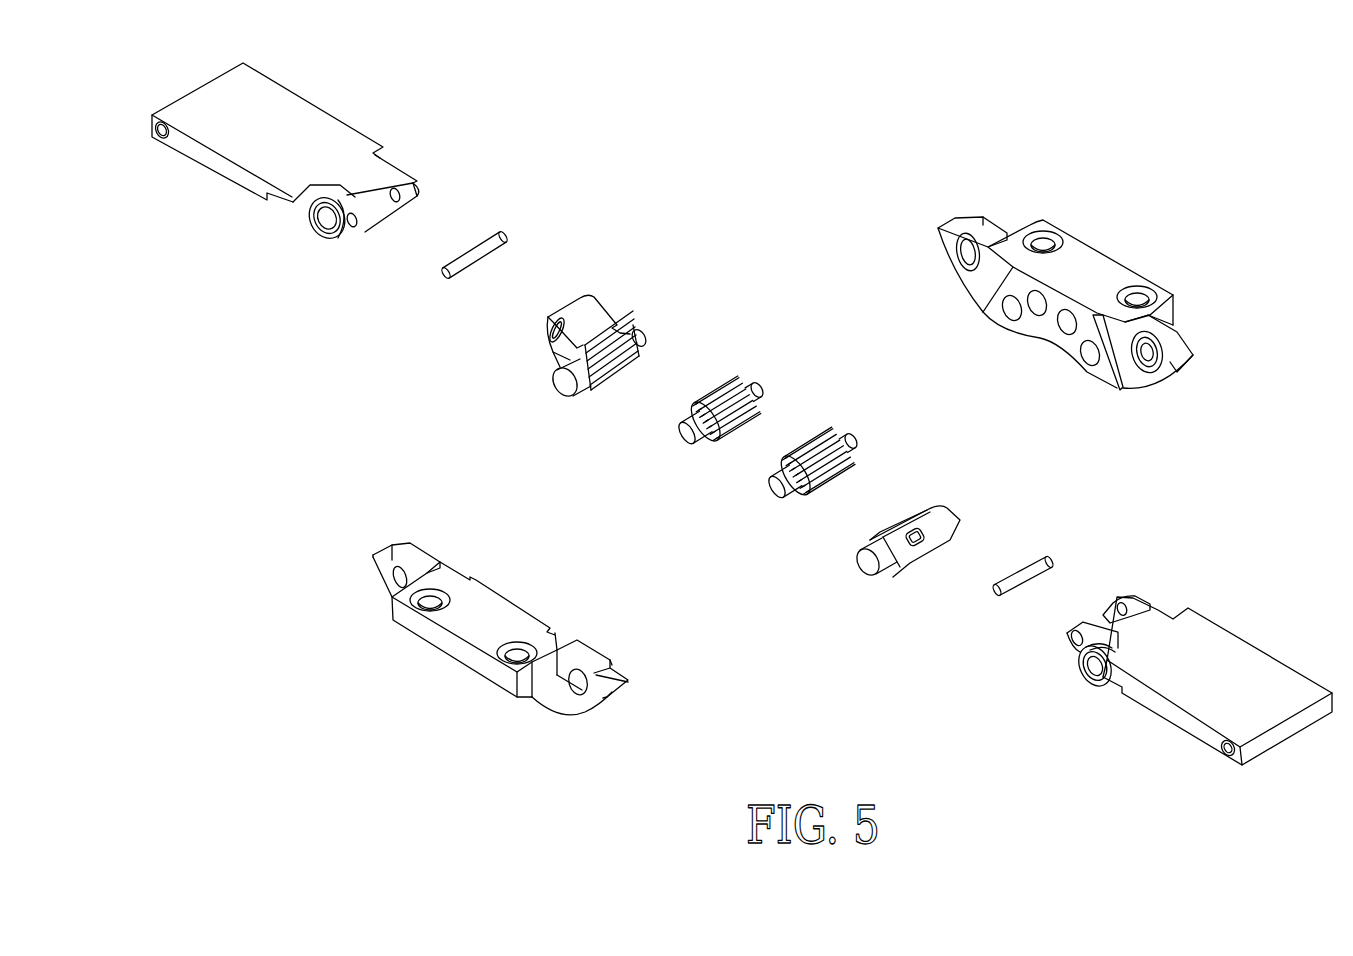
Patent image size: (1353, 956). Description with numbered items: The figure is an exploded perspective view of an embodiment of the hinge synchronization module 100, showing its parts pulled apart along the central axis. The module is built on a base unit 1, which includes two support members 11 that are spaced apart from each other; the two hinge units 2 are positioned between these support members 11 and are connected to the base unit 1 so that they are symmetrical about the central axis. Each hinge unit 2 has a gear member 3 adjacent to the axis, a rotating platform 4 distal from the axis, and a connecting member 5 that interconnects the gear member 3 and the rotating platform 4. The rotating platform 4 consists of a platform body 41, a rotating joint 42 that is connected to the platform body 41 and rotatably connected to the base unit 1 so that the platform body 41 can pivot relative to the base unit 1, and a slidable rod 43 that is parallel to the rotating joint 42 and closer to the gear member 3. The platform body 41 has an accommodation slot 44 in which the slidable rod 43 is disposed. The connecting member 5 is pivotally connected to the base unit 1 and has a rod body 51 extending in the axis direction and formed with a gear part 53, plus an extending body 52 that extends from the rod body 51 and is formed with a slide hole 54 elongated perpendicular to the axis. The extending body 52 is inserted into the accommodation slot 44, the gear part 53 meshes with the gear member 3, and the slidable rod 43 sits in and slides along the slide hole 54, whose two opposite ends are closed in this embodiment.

The hinge synchronization module 100 is at (1183, 177).
The base unit 1 is at (1168, 260).
The support member 11 is at (1093, 267).
The hinge unit 2 is at (207, 202).
The gear member 3 is at (677, 440).
The rotating platform 4 is at (297, 80).
The platform body 41 is at (323, 130).
The rotating joint 42 is at (313, 210).
The slidable rod 43 is at (477, 253).
The accommodation slot 44 is at (373, 197).
The connecting member 5 is at (528, 372).
The rod body 51 is at (580, 397).
The extending body 52 is at (572, 303).
The gear part 53 is at (617, 387).
The slide hole 54 is at (548, 330).